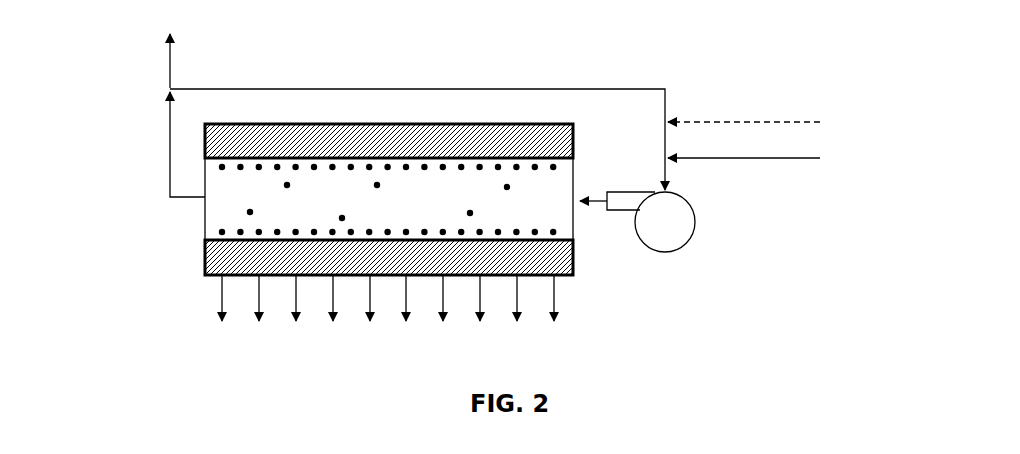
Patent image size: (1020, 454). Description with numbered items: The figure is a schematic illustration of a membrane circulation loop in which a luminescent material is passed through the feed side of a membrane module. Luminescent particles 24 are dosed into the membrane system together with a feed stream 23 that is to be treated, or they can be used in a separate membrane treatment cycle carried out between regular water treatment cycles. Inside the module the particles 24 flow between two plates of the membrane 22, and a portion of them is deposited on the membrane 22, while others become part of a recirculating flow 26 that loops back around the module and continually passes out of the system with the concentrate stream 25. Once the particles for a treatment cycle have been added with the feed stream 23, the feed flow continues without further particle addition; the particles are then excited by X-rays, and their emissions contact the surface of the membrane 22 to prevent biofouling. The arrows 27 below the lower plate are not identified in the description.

The membrane 22 is at (575, 145).
The feed stream 23 is at (753, 158).
The luminescent particles 24 is at (280, 230).
The concentrate stream 25 is at (168, 152).
The recirculating flow 26 is at (360, 84).
The heat flow arrows 27 is at (388, 313).